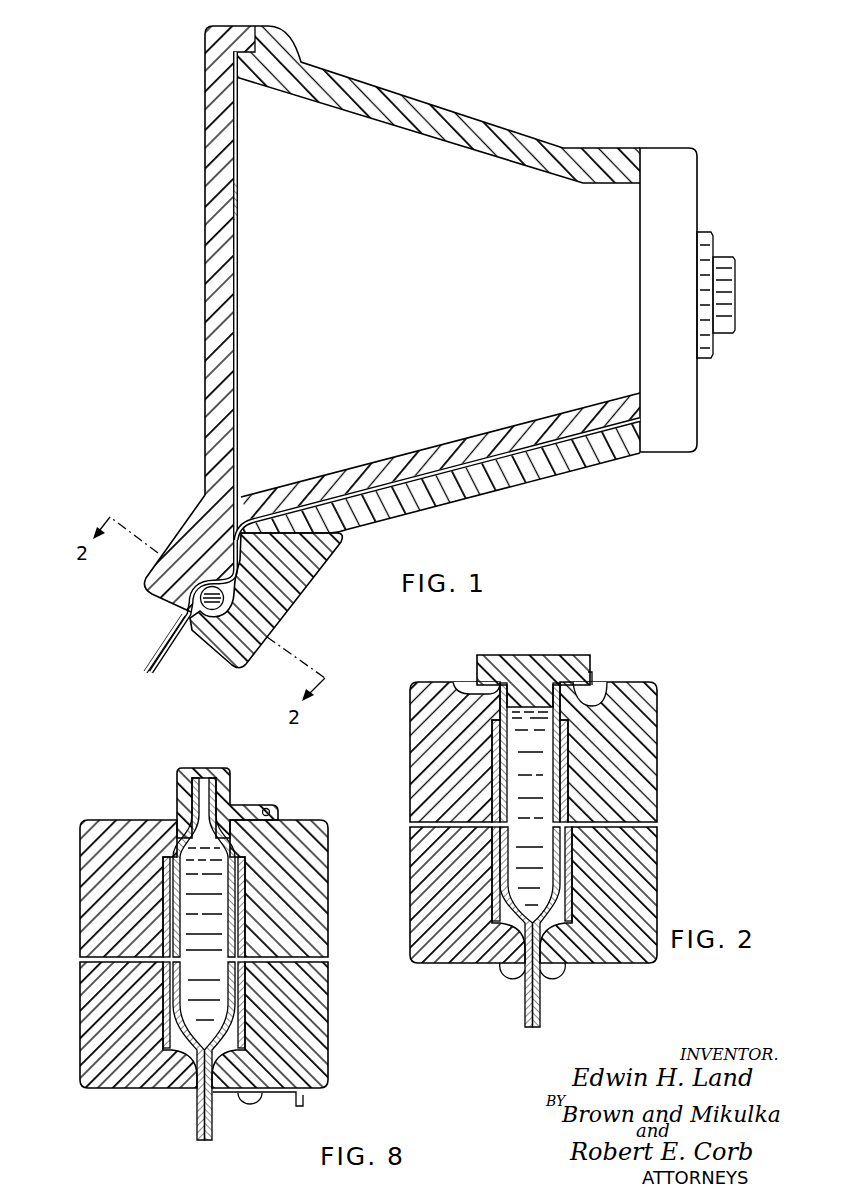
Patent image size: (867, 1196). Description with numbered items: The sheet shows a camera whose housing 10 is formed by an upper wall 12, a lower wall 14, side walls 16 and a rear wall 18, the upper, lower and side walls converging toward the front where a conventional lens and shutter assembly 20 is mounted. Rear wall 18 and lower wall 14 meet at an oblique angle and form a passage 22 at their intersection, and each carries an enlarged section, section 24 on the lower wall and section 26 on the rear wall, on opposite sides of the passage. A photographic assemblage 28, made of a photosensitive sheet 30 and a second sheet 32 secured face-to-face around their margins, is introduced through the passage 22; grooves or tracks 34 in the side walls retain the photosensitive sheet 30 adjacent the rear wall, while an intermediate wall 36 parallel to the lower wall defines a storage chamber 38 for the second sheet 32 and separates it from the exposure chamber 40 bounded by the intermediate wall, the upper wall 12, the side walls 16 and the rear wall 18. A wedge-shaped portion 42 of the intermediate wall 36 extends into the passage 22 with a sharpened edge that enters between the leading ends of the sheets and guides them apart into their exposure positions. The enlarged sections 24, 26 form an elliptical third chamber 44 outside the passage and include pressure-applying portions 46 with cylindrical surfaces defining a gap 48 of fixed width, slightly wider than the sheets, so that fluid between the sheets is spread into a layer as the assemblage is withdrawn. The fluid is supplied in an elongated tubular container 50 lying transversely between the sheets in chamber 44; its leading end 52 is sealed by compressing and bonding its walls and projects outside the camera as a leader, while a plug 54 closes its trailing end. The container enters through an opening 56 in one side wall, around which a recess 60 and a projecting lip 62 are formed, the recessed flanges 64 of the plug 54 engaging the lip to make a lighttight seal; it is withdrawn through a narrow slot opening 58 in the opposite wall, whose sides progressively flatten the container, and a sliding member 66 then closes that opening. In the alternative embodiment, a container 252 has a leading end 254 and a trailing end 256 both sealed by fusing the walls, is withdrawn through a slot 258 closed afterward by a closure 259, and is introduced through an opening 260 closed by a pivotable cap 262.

In FIG. 1, the housing 10 is at (434, 508).
In FIG. 1, the upper wall 12 is at (446, 120).
In FIG. 1, the lower wall 14 is at (566, 468).
In FIG. 1, the side walls 16 is at (445, 264).
In FIG. 1, the rear wall 18 is at (214, 260).
In FIG. 1, the lens and shutter assembly 20 is at (699, 383).
In FIG. 1, the passage 22 is at (303, 548).
In FIG. 1, the enlarged section 24 is at (274, 628).
In FIG. 2, the enlarged section 24 is at (660, 800).
In FIG. 8, the enlarged section 24 is at (330, 985).
In FIG. 1, the enlarged section 26 is at (184, 526).
In FIG. 2, the enlarged section 26 is at (409, 806).
In FIG. 8, the enlarged section 26 is at (79, 1022).
In FIG. 1, the photographic assemblage 28 is at (152, 672).
In FIG. 1, the photosensitive sheet 30 is at (241, 297).
In FIG. 2, the photosensitive sheet 30 is at (499, 754).
In FIG. 8, the photosensitive sheet 30 is at (172, 906).
In FIG. 1, the second sheet 32 is at (456, 462).
In FIG. 2, the second sheet 32 is at (562, 758).
In FIG. 8, the second sheet 32 is at (236, 1022).
In FIG. 1, the grooves or tracks 34 is at (240, 200).
In FIG. 1, the intermediate wall 36 is at (398, 464).
In FIG. 1, the storage chamber 38 is at (507, 467).
In FIG. 1, the exposure chamber 40 is at (222, 354).
In FIG. 1, the wedge-shaped portion 42 is at (252, 500).
In FIG. 1, the third chamber 44 is at (190, 584).
In FIG. 2, the third chamber 44 is at (496, 865).
In FIG. 1, the pressure-applying portions 46 is at (174, 608).
In FIG. 1, the gap 48 is at (172, 632).
In FIG. 1, the tubular container 50 is at (248, 594).
In FIG. 2, the tubular container 50 is at (564, 849).
In FIG. 2, the leading end 52 is at (541, 1010).
In FIG. 2, the plug 54 is at (546, 664).
In FIG. 2, the opening 56 is at (600, 696).
In FIG. 2, the opening 58 is at (508, 966).
In FIG. 2, the recess 60 is at (462, 684).
In FIG. 2, the projecting lip 62 is at (600, 690).
In FIG. 2, the recessed flanges 64 is at (470, 686).
In FIG. 2, the sliding member 66 is at (560, 968).
In FIG. 8, the container 252 is at (238, 916).
In FIG. 8, the leading end 254 is at (196, 1132).
In FIG. 8, the trailing end 256 is at (196, 803).
In FIG. 8, the slot 258 is at (194, 1086).
In FIG. 8, the closure 259 is at (272, 1098).
In FIG. 8, the opening 260 is at (290, 798).
In FIG. 8, the pivotable cap 262 is at (206, 768).